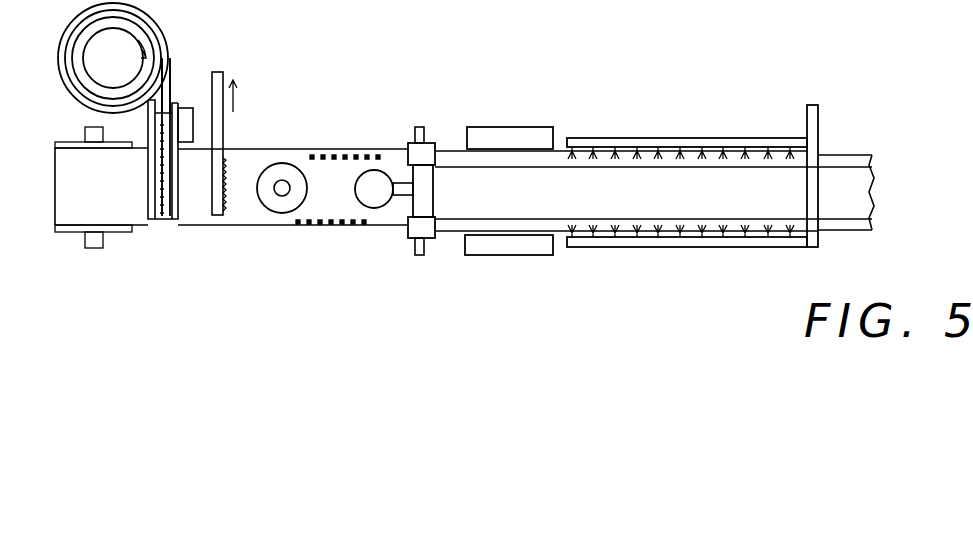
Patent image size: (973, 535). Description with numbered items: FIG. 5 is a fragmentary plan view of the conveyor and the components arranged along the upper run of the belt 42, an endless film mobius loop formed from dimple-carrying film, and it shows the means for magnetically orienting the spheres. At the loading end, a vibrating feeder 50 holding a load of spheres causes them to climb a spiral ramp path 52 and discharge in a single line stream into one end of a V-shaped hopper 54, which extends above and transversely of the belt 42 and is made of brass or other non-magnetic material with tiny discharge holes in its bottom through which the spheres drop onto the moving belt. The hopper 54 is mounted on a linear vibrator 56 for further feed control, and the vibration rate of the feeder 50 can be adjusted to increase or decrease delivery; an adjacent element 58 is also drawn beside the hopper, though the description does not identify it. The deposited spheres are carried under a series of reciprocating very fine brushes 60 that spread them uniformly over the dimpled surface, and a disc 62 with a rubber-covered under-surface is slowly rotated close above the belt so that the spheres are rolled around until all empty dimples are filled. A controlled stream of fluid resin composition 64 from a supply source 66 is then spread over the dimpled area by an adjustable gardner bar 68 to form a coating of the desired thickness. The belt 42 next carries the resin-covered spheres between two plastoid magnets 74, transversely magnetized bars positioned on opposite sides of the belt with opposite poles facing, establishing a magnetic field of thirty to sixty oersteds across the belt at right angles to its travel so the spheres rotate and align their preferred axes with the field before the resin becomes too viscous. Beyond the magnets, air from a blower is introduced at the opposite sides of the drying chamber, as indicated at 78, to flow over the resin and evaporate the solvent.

The endless film mobius loop belt 42 is at (108, 197).
The vibrating feeder 50 is at (78, 102).
The spiral ramp path 52 is at (150, 65).
The V-shaped hopper 54 is at (168, 215).
The linear vibrator 56 is at (160, 200).
The guide block 58 is at (186, 116).
The reciprocating fine brushes 60 is at (228, 170).
The disc 62 is at (283, 171).
The fluid resin composition 64 is at (400, 183).
The supply source 66 is at (373, 172).
The adjustable gardner bar 68 is at (429, 147).
The plastoid magnets 74 is at (480, 132).
The air inlets 78 is at (688, 152).